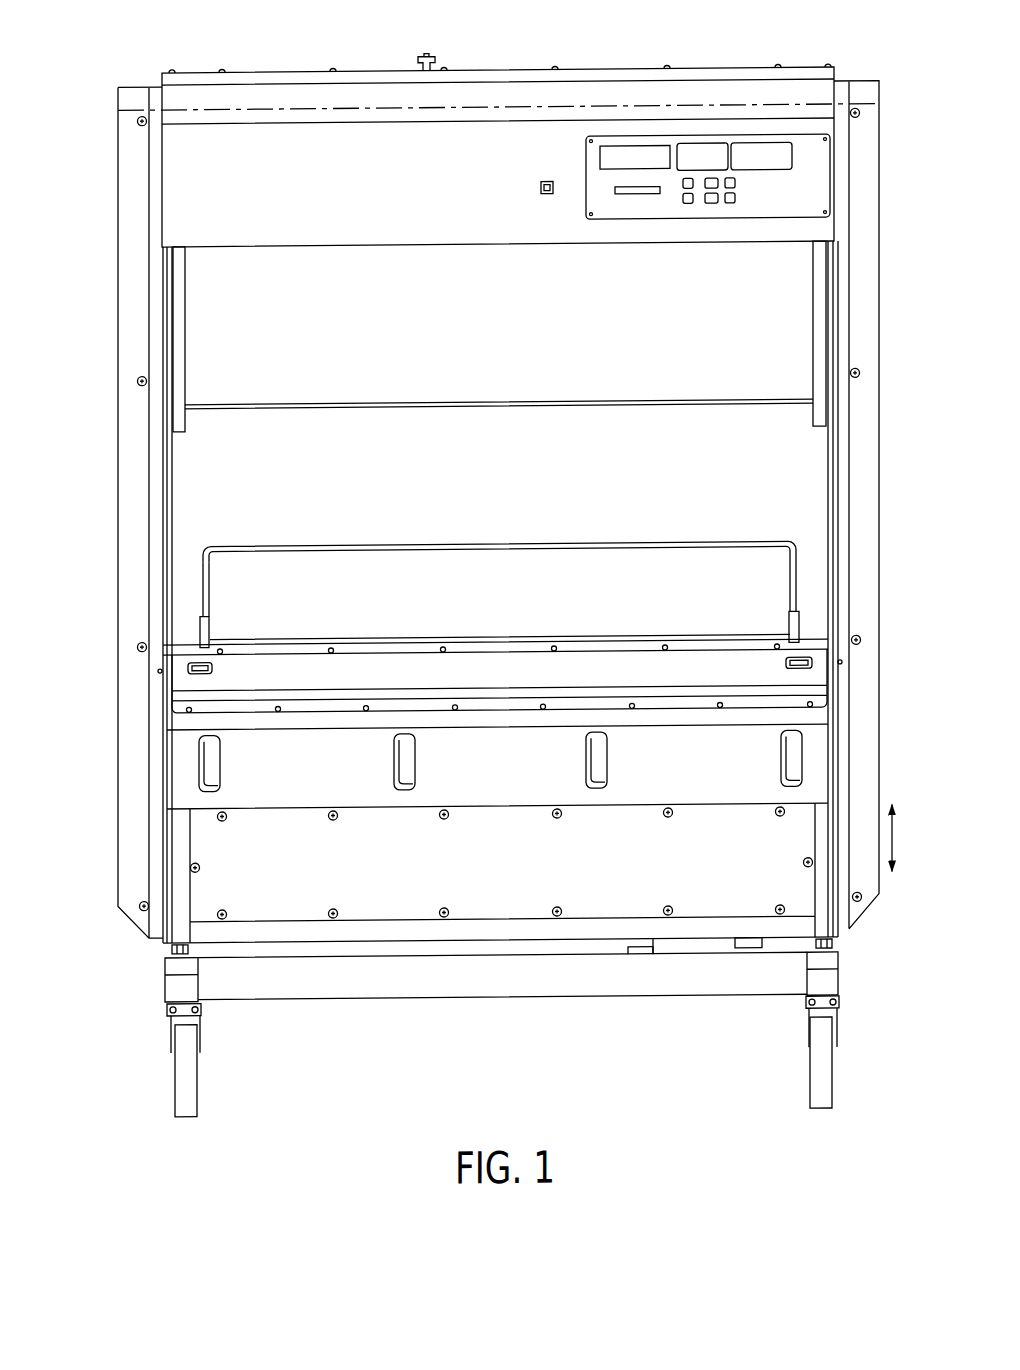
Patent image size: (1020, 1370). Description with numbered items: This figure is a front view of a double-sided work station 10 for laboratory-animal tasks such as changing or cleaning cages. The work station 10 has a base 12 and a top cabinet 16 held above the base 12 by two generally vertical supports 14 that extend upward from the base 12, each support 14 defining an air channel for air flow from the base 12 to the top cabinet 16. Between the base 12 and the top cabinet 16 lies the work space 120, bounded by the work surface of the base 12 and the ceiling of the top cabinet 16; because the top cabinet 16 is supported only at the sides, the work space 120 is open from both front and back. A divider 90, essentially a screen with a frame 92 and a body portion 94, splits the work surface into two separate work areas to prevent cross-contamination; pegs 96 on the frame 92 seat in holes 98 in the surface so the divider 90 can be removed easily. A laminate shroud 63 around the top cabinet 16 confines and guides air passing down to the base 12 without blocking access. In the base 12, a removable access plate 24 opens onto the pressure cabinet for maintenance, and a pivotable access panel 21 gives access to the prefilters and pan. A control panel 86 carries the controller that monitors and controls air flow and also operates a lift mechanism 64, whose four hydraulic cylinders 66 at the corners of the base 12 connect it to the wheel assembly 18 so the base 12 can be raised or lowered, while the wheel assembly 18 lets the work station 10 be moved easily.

The double-sided work station 10 is at (116, 194).
The base 12 is at (114, 854).
The vertical supports 14 is at (118, 414).
The top cabinet 16 is at (246, 68).
The wheel assembly 18 is at (156, 1001).
The pivotable access panel 21 is at (757, 665).
The removable access plate 24 is at (222, 874).
The laminate shroud 63 is at (800, 293).
The lift mechanism 64 is at (852, 950).
The hydraulic cylinders 66 is at (172, 950).
The control panel 86 is at (806, 190).
The divider 90 is at (690, 538).
The frame 92 is at (562, 543).
The body portion 94 is at (232, 590).
The pegs 96 is at (212, 640).
The holes 98 is at (214, 655).
The work space 120 is at (430, 484).